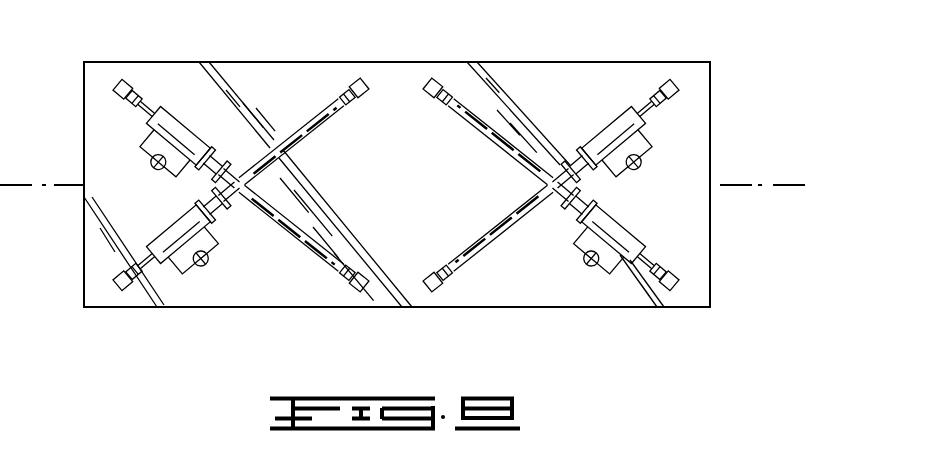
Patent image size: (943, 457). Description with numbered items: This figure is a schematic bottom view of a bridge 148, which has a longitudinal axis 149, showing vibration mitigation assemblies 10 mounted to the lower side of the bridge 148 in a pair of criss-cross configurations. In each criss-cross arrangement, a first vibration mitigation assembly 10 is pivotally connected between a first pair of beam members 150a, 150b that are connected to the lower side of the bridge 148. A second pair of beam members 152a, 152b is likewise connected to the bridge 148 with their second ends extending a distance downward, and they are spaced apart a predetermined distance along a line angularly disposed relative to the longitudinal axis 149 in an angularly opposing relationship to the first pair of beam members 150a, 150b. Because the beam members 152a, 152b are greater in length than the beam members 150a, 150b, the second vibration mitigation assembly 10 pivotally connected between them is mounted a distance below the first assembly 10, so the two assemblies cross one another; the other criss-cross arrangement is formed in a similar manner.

The vibration mitigation assembly 10 is at (188, 121).
The bridge 148 is at (268, 77).
The longitudinal axis 149 is at (790, 184).
The beam member 150a is at (133, 290).
The beam member 150b is at (357, 80).
The beam member 152a is at (130, 78).
The beam member 152b is at (348, 292).